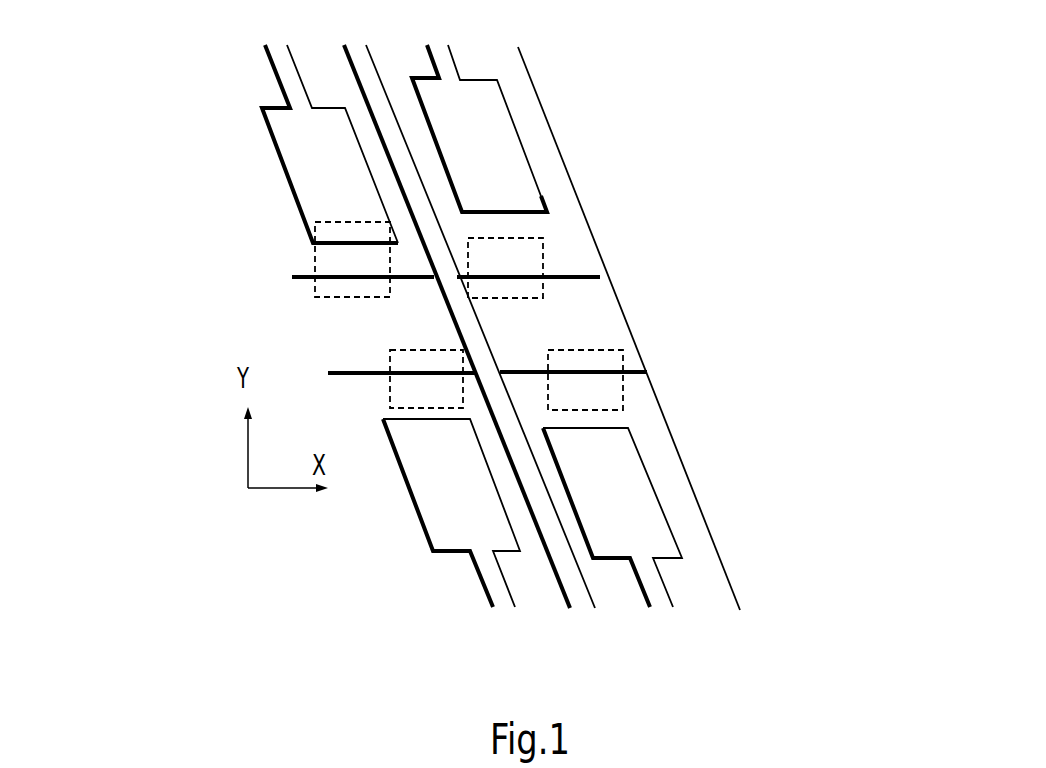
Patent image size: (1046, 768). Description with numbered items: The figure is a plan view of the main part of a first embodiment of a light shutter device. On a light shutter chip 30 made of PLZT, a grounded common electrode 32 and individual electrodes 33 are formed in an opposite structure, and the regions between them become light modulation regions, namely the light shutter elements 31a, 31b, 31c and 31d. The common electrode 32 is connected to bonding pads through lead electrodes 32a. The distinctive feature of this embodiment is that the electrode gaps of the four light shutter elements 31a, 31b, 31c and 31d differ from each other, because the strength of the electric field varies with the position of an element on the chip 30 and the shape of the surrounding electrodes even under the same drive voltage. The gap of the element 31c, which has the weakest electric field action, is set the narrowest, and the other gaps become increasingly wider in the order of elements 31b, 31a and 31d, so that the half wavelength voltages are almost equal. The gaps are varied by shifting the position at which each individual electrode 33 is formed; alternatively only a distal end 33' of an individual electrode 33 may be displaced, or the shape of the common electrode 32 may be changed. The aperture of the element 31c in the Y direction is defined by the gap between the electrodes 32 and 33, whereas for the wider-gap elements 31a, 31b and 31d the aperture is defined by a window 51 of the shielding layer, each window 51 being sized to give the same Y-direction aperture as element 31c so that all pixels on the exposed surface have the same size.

The light shutter chip 30 is at (556, 102).
The light shutter element 31a is at (587, 398).
The light shutter element 31b is at (408, 378).
The light shutter element 31c is at (352, 260).
The light shutter element 31d is at (533, 247).
The common electrode 32 is at (597, 322).
The lead electrode 32a is at (368, 72).
The individual electrode 33 is at (491, 326).
The distal end of individual electrode 33' is at (590, 193).
The window of the shielding layer 51 is at (477, 316).